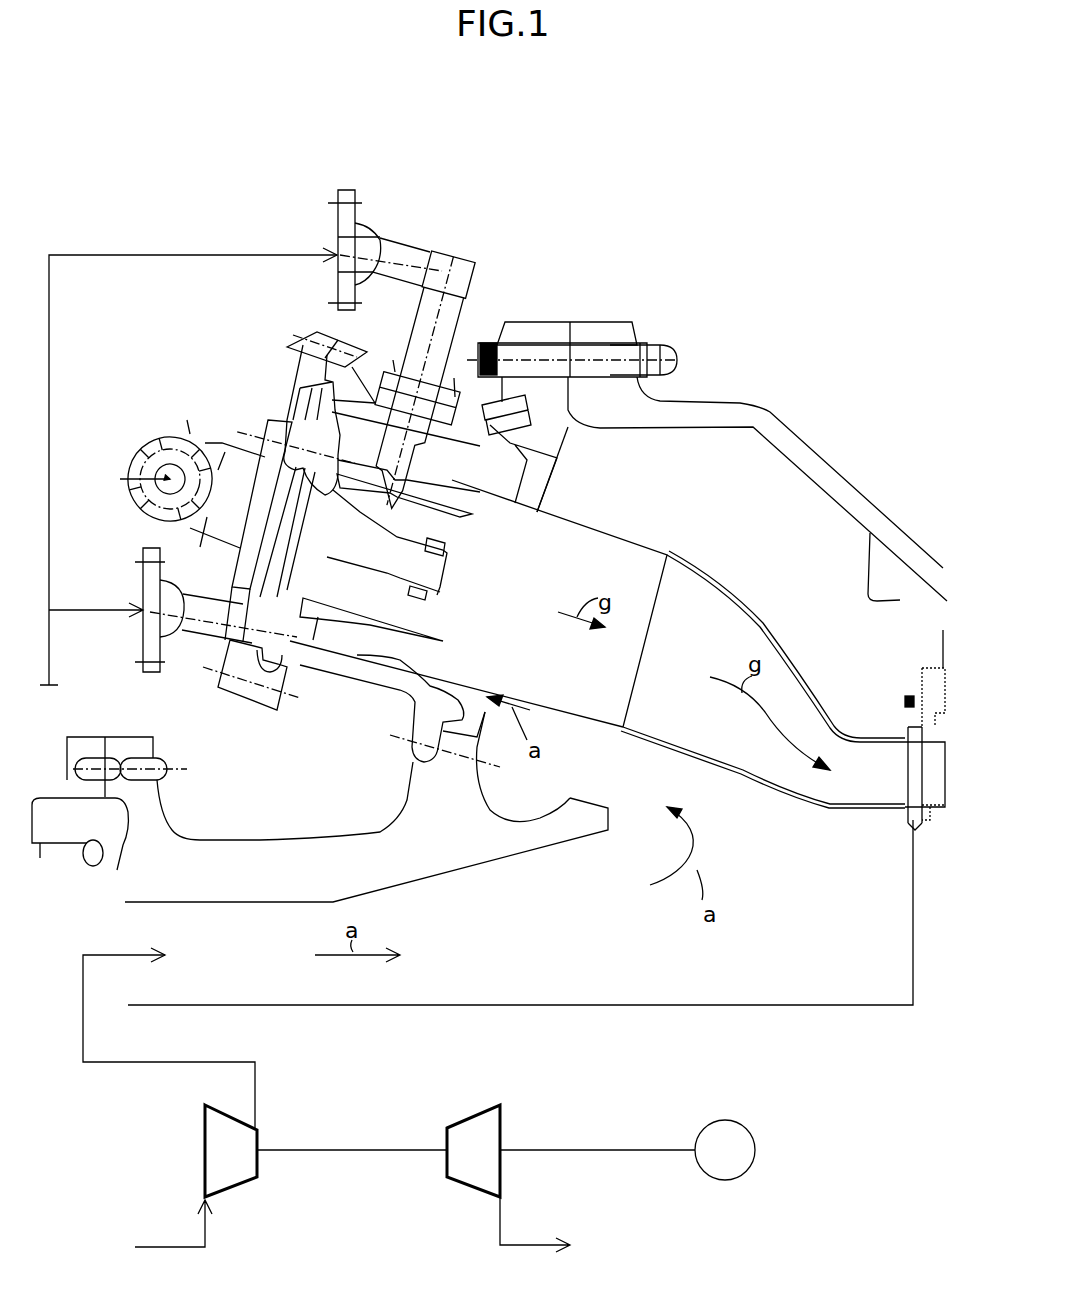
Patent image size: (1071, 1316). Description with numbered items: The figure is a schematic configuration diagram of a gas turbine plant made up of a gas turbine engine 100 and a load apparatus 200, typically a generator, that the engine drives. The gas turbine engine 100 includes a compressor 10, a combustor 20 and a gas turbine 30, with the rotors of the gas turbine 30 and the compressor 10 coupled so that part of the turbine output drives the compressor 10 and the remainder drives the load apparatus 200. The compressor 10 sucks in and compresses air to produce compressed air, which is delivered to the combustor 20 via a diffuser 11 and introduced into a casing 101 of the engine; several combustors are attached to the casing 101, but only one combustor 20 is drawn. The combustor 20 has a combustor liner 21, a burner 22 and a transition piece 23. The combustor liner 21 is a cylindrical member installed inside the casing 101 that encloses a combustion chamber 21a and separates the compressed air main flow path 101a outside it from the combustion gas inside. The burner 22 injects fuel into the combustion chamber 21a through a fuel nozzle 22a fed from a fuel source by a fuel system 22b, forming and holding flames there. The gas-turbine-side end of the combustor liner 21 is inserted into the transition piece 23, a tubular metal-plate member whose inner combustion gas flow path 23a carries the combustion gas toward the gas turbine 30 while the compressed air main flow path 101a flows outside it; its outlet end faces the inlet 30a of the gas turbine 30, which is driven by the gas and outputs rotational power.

The compressor 10 is at (205, 1150).
The diffuser 11 is at (288, 840).
The combustor 20 is at (261, 375).
The combustor liner 21 is at (613, 532).
The combustion chamber 21a is at (531, 615).
The burner 22 is at (241, 434).
The fuel nozzle 22a is at (448, 515).
The fuel system 22b is at (58, 646).
The transition piece 23 is at (747, 778).
The combustion gas flow path 23a is at (719, 636).
The gas turbine 30 is at (474, 1112).
The inlet of the gas turbine 30a is at (937, 775).
The gas turbine engine 100 is at (587, 274).
The casing 101 is at (733, 403).
The compressed air main flow path 101a is at (644, 788).
The load apparatus 200 is at (728, 1110).